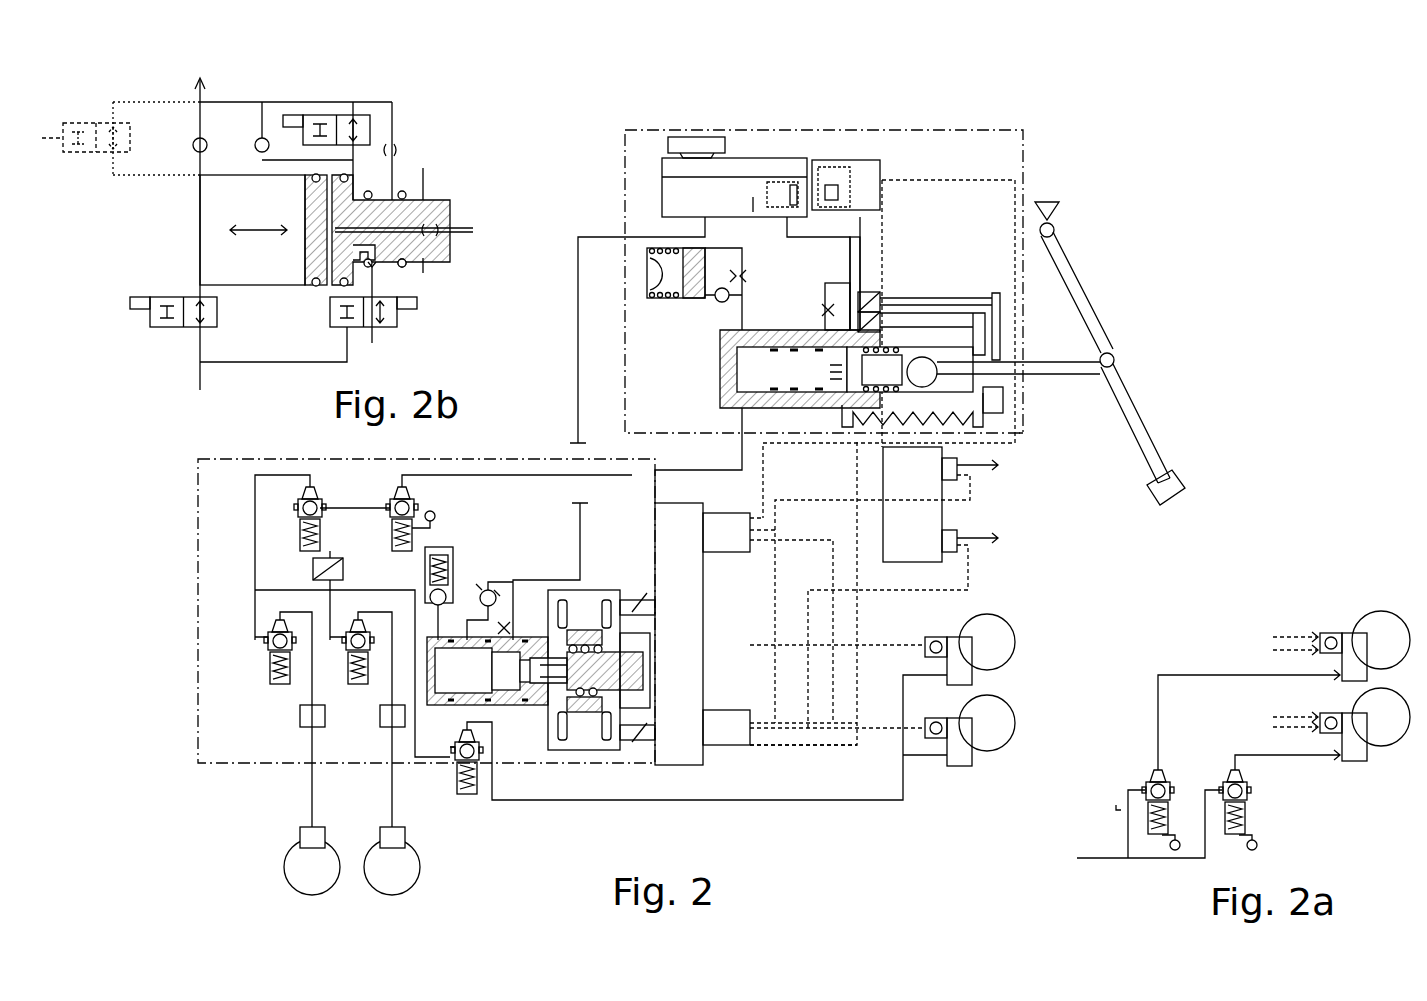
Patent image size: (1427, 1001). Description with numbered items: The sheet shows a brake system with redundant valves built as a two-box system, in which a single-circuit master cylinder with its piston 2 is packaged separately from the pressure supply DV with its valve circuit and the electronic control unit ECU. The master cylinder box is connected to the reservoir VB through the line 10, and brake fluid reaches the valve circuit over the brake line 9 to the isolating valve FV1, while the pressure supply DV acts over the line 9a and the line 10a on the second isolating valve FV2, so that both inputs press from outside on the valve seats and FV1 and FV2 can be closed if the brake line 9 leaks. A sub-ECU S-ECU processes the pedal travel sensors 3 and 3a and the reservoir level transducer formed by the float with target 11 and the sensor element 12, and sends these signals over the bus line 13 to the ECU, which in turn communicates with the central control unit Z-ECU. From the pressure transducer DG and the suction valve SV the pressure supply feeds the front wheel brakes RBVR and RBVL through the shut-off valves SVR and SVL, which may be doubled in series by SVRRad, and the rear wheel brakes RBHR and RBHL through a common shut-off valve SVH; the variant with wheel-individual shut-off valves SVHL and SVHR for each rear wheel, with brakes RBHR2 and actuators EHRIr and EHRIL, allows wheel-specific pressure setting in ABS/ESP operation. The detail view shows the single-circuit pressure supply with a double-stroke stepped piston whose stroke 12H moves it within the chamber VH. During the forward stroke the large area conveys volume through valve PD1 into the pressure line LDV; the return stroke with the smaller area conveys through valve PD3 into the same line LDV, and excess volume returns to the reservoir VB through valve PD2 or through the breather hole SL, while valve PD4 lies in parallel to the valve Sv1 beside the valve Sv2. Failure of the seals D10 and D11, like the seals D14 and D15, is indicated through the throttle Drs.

In FIG. 2B, the valve PD4 is at (68, 125).
In FIG. 2B, the reservoir VB is at (454, 336).
In FIG. 2, the reservoir VB is at (664, 197).
In FIG. 2B, the valve SV1 Sv1 is at (195, 150).
In FIG. 2B, the check valve Sv2 is at (256, 146).
In FIG. 2B, the valve PD2 is at (372, 130).
In FIG. 2B, the throttle for redundant seal Drs is at (400, 148).
In FIG. 2B, the volume chamber VH is at (252, 230).
In FIG. 2B, the piston stroke 12H is at (258, 244).
In FIG. 2B, the seal D10 is at (408, 265).
In FIG. 2B, the breather hole SL is at (372, 262).
In FIG. 2B, the valve PD1 is at (200, 316).
In FIG. 2, the valve PD1 is at (453, 560).
In FIG. 2B, the valve PD3 is at (398, 320).
In FIG. 2B, the seal D11 is at (381, 319).
In FIG. 2B, the seal D14 is at (343, 286).
In FIG. 2B, the seal D15 is at (315, 285).
In FIG. 2B, the pressure line LDV is at (212, 362).
In FIG. 2, the pressure line LDV is at (371, 581).
In FIG. 2, the float with target 11 is at (790, 190).
In FIG. 2, the sensor element 12 is at (838, 190).
In FIG. 2, the sub-ECU for sensors S-ECU is at (882, 172).
In FIG. 2, the line to the reservoir VB 10a is at (858, 248).
In FIG. 2, the line to the reservoir VB 10 is at (578, 300).
In FIG. 2, the piston DK 2 is at (696, 275).
In FIG. 2, the pedal travel sensor 1 SM 3 is at (925, 298).
In FIG. 2, the pedal travel sensor 2 SSL 3a is at (948, 318).
In FIG. 2, the bus line 13 is at (1020, 445).
In FIG. 2, the brake line 9 is at (553, 475).
In FIG. 2, the line 9a is at (262, 590).
In FIG. 2, the isolating valve FV1 is at (410, 505).
In FIG. 2, the isolating valve FV2 is at (298, 505).
In FIG. 2, the pressure transducer DG is at (330, 556).
In FIG. 2, the suction valve SV is at (490, 590).
In FIG. 2, the shut-off valve SVR is at (265, 640).
In FIG. 2, the shut-off valve SVL is at (368, 685).
In FIG. 2, the wheel switching valve SVRRad is at (300, 727).
In FIG. 2, the wheel brake front right RBVR is at (302, 880).
In FIG. 2, the wheel brake front left RBVL is at (397, 880).
In FIG. 2, the shut-off valve SVH is at (470, 797).
In FIG. 2, the pressure supply DV is at (498, 708).
In FIG. 2A, the pressure supply DV is at (1105, 858).
In FIG. 2, the electronic open-loop and closed-loop control unit ECU is at (680, 618).
In FIG. 2, the central control unit Z-ECU is at (930, 512).
In FIG. 2, the electric rear brake right EHRIr is at (950, 645).
In FIG. 2, the electric rear brake left EHRIL is at (962, 730).
In FIG. 2, the wheel brake rear right RBHR is at (1000, 630).
In FIG. 2, the wheel brake rear left RBHL is at (1000, 715).
In FIG. 2A, the shut-off valve SVHL is at (1145, 790).
In FIG. 2A, the shut-off valve SVHR is at (1222, 785).
In FIG. 2A, the rear wheel brakes RBHR2 is at (1341, 686).